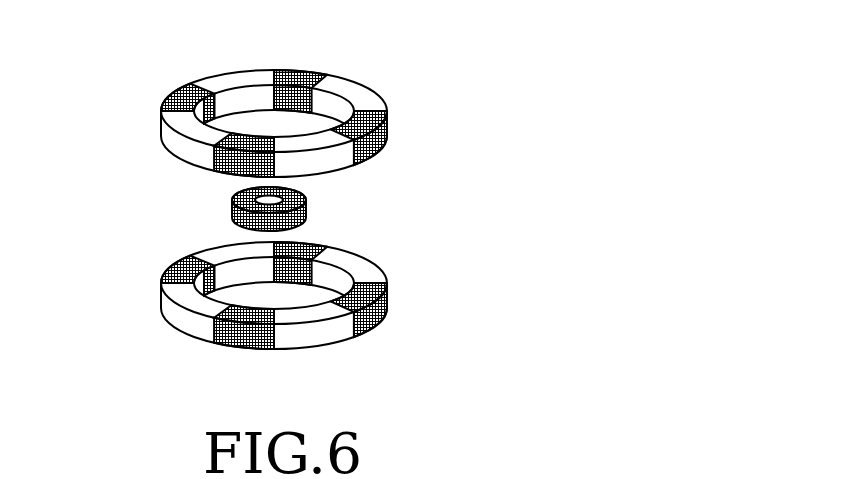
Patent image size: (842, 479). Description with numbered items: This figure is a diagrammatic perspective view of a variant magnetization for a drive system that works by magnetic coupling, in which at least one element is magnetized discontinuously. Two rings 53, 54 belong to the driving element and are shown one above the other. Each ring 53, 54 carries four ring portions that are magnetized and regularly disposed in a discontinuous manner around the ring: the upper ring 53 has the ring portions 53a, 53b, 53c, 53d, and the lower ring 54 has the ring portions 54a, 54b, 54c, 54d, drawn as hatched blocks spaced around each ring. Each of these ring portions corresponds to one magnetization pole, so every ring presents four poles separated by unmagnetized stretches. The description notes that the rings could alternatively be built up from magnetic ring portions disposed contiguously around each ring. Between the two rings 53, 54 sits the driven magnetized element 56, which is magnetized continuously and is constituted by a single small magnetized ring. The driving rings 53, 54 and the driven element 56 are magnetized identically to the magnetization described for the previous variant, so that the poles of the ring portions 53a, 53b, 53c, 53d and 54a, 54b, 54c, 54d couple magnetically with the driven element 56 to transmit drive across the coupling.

The ring 53 is at (251, 110).
The ring portion 53a is at (303, 72).
The ring portion 53b is at (168, 98).
The ring portion 53c is at (232, 175).
The ring portion 53d is at (380, 150).
The ring 54 is at (286, 322).
The ring portion 54a is at (322, 248).
The ring portion 54b is at (170, 270).
The ring portion 54c is at (220, 343).
The ring portion 54d is at (372, 323).
The driven magnetized element 56 is at (310, 210).